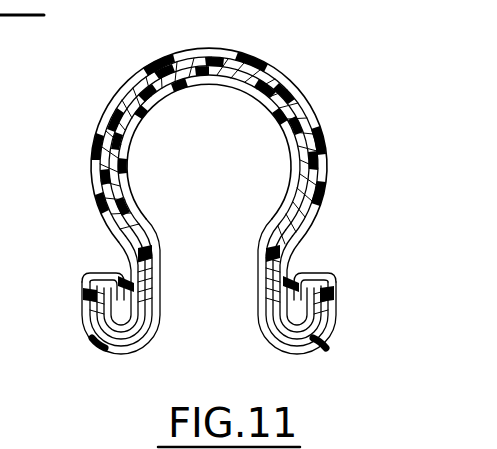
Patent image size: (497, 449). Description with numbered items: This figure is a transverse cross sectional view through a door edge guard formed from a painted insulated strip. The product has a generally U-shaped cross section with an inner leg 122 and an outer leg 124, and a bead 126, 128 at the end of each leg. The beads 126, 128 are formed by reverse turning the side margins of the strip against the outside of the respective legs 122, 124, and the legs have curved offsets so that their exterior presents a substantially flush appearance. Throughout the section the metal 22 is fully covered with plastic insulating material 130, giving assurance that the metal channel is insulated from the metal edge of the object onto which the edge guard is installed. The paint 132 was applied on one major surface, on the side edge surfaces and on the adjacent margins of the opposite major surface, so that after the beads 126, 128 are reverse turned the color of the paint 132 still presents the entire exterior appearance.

The metal 22 is at (305, 208).
The inner leg 122 is at (107, 173).
The outer leg 124 is at (322, 158).
The bead 126 is at (120, 356).
The bead 128 is at (305, 360).
The plastic insulating material 130 is at (300, 104).
The paint 132 is at (218, 48).